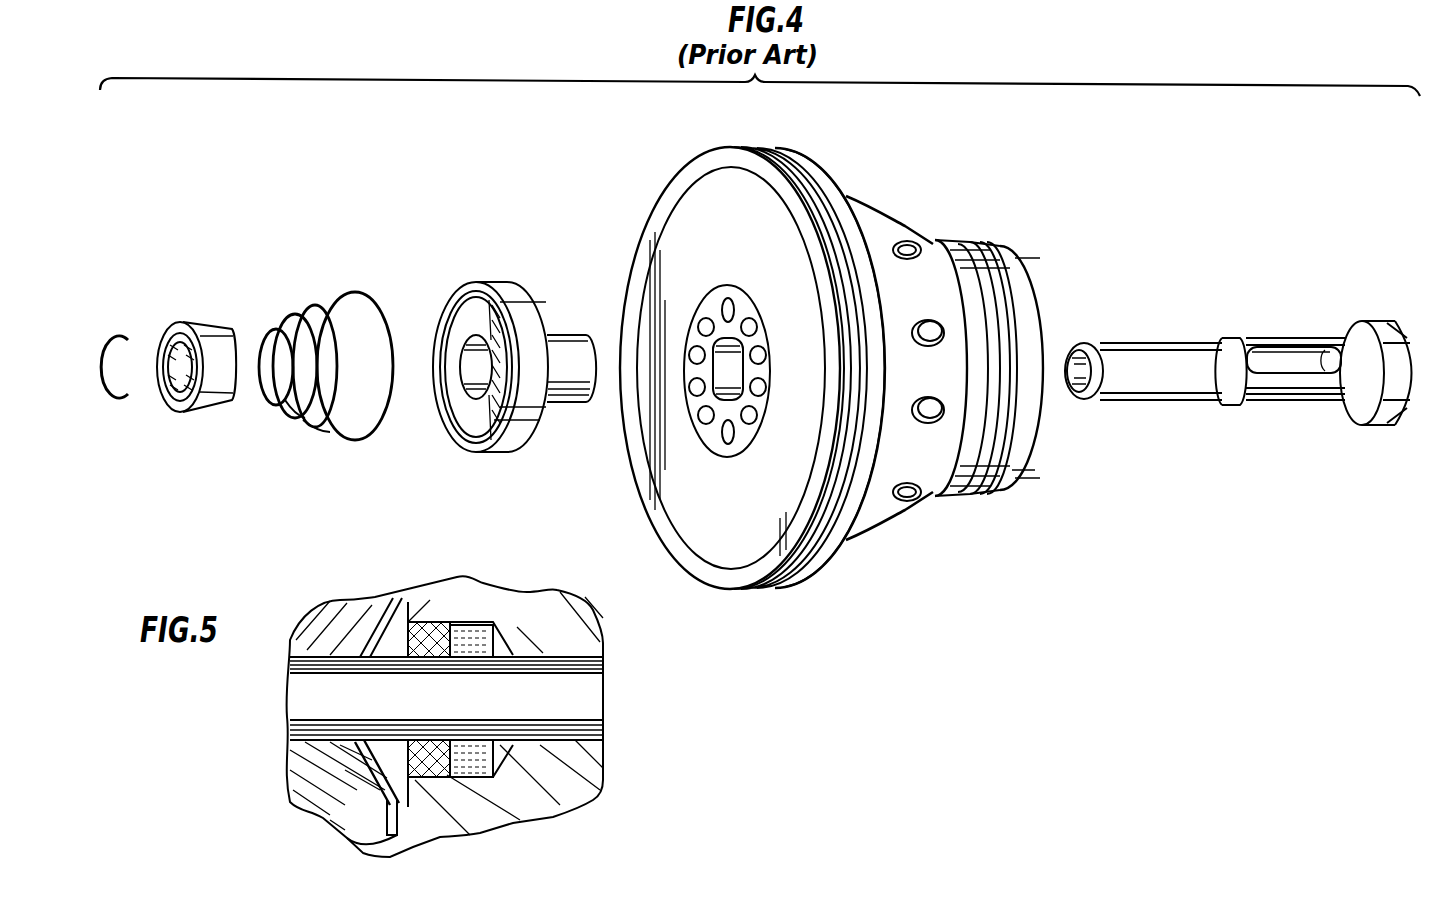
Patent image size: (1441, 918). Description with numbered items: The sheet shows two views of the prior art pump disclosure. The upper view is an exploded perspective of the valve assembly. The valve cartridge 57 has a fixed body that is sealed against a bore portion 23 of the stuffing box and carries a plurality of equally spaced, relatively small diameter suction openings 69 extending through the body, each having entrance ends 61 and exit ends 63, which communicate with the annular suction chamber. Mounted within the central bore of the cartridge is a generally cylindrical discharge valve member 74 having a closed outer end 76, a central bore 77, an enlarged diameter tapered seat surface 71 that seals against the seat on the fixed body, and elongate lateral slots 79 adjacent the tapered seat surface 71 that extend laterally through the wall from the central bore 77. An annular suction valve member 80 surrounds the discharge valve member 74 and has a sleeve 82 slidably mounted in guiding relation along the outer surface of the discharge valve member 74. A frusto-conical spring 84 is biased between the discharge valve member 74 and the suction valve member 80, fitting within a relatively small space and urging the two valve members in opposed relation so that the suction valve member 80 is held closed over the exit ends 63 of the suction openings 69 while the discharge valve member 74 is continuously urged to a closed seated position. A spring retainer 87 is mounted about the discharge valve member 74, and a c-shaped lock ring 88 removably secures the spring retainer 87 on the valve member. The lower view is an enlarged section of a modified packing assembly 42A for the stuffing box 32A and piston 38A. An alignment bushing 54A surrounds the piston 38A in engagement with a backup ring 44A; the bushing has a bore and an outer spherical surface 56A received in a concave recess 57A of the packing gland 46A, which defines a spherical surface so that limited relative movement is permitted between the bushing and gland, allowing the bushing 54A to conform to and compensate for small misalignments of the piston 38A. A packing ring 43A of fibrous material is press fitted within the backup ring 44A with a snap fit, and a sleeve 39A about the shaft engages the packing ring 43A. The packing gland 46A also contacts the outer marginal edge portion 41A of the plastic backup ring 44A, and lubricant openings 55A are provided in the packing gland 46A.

In FIG. 4, the bore portion 23 is at (983, 500).
In FIG. 4, the valve cartridge 57 is at (817, 212).
In FIG. 4, the entrance ends 61 is at (896, 258).
In FIG. 4, the exit ends 63 is at (731, 438).
In FIG. 4, the suction openings 69 is at (751, 326).
In FIG. 4, the tapered seat surface 71 is at (1341, 322).
In FIG. 4, the discharge valve member 74 is at (1189, 402).
In FIG. 4, the closed outer end 76 is at (1413, 358).
In FIG. 4, the central bore 77 is at (1071, 380).
In FIG. 4, the lateral slots 79 is at (1290, 338).
In FIG. 4, the suction valve member 80 is at (506, 295).
In FIG. 4, the sleeve 82 is at (567, 352).
In FIG. 4, the spring 84 is at (312, 305).
In FIG. 4, the spring retainer 87 is at (212, 325).
In FIG. 4, the c-shaped lock ring 88 is at (121, 334).
In FIG. 5, the stuffing box 32A is at (570, 619).
In FIG. 5, the piston 38A is at (322, 701).
In FIG. 5, the sleeve 39A is at (600, 747).
In FIG. 5, the outer marginal edge portion 41A is at (345, 836).
In FIG. 5, the modified packing assembly 42A is at (478, 620).
In FIG. 5, the packing ring 43A is at (478, 660).
In FIG. 5, the backup ring 44A is at (445, 662).
In FIG. 5, the packing gland 46A is at (320, 622).
In FIG. 5, the alignment bushing 54A is at (360, 758).
In FIG. 5, the lubricant openings 55A is at (363, 748).
In FIG. 5, the outer spherical surface 56A is at (342, 822).
In FIG. 5, the concave recess 57A is at (395, 758).